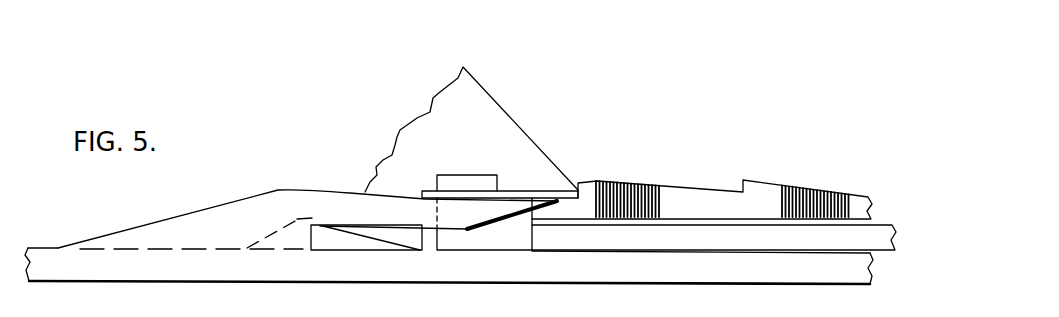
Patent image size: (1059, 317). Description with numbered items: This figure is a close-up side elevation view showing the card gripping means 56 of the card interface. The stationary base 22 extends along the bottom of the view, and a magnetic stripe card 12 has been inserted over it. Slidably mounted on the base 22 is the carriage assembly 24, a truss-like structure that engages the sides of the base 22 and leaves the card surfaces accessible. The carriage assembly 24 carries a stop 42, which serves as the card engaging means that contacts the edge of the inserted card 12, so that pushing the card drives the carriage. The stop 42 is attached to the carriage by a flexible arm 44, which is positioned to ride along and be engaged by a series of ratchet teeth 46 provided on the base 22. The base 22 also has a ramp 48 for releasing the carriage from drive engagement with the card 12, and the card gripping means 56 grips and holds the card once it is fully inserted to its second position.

The magnetic stripe card 12 is at (882, 238).
The base 22 is at (712, 272).
The carriage assembly 24 is at (497, 118).
The stop 42 is at (523, 237).
The flexible arm 44 is at (485, 186).
The ratchet teeth 46 is at (756, 186).
The ramp 48 is at (324, 233).
The card gripping means 56 is at (248, 207).